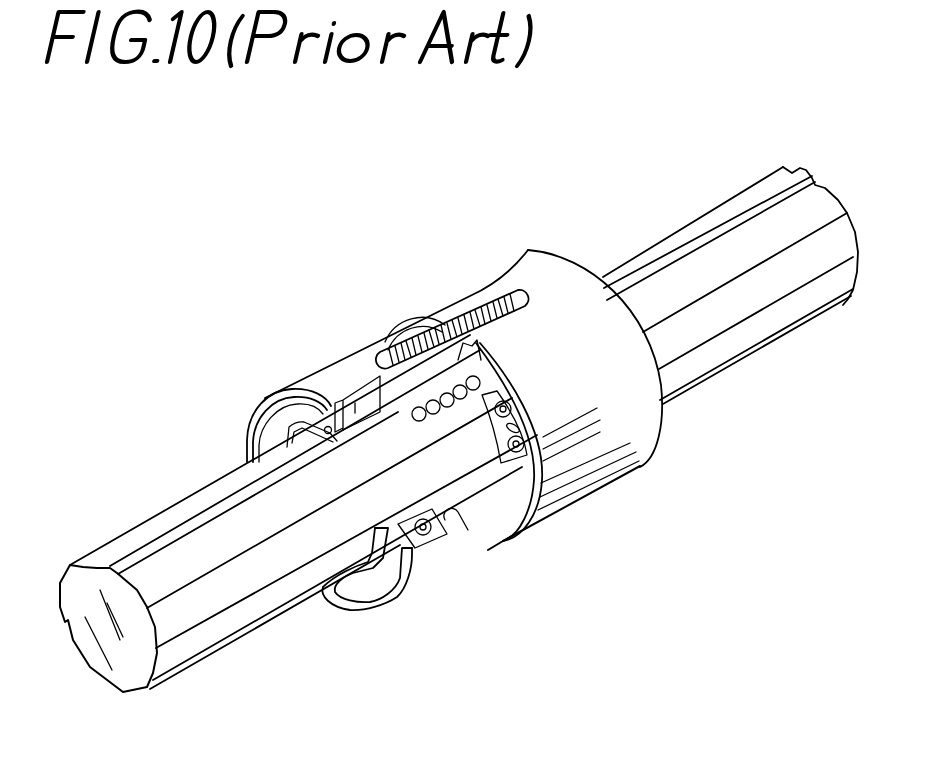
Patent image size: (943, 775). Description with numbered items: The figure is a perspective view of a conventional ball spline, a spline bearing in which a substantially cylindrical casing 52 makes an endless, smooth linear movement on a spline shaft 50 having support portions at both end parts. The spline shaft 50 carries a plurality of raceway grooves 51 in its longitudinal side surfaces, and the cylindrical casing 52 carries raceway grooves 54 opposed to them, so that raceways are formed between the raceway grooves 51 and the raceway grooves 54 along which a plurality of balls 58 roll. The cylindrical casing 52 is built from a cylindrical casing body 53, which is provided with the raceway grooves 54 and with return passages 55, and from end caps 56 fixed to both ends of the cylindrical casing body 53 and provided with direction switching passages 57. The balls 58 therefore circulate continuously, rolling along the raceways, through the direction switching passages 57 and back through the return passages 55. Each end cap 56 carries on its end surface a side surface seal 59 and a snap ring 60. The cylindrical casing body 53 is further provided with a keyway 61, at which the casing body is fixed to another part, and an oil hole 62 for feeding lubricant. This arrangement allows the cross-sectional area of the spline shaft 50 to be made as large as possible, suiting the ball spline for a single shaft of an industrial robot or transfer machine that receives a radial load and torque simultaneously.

The spline shaft 50 is at (728, 199).
The raceway grooves 51 is at (187, 550).
The cylindrical casing 52 is at (552, 249).
The cylindrical casing body 53 is at (637, 432).
The raceway grooves 54 is at (494, 374).
The return passages 55 is at (522, 403).
The end caps 56 is at (332, 404).
The direction switching passages 57 is at (451, 520).
The balls 58 is at (440, 387).
The side surface seal 59 is at (380, 612).
The snap ring 60 is at (413, 563).
The keyway 61 is at (487, 340).
The oil hole 62 is at (533, 428).